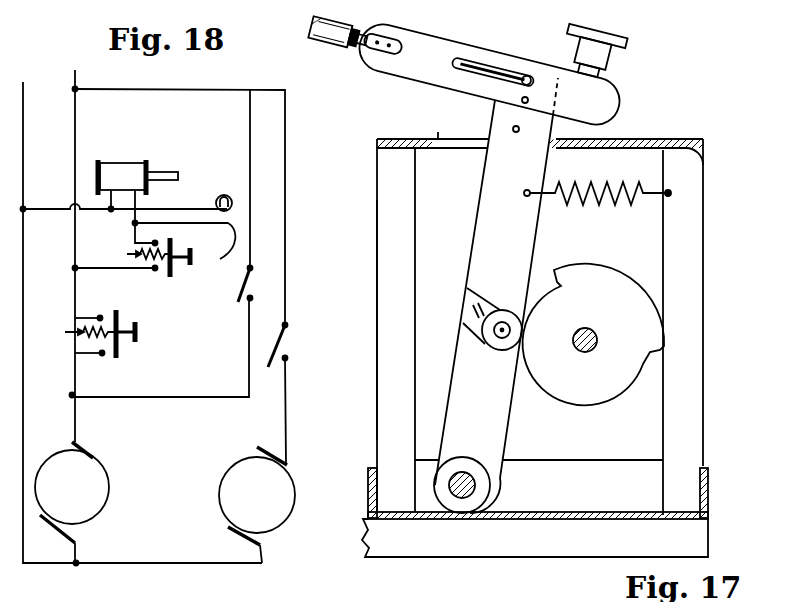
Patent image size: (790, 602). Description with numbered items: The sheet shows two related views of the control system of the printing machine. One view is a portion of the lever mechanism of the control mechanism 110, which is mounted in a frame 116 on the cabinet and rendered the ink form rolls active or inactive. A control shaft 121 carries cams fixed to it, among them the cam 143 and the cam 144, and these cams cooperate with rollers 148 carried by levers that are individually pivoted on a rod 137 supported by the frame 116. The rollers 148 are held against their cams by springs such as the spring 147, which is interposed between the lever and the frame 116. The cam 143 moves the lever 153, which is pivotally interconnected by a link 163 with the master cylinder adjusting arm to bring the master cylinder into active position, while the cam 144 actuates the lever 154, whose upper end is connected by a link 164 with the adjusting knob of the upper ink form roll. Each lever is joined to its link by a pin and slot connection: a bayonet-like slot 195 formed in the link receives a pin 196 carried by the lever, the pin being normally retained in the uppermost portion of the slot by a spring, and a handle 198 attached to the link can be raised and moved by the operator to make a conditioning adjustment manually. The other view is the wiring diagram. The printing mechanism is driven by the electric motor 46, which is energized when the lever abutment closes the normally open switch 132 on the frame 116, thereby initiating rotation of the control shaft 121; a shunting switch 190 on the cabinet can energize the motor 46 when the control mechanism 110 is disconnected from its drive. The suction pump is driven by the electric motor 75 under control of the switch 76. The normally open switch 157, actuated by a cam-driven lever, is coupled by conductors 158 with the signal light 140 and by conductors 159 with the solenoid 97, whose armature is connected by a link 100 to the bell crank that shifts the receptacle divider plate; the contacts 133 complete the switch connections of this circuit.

In FIG. 18, the solenoid 97 is at (122, 168).
In FIG. 18, the link 100 is at (161, 173).
In FIG. 18, the signal light 140 is at (222, 187).
In FIG. 18, the conductors 158 is at (129, 234).
In FIG. 18, the electric switch 157 is at (177, 243).
In FIG. 18, the conductors 159 is at (188, 253).
In FIG. 18, the shunting switch 190 is at (235, 297).
In FIG. 18, the switch 76 is at (282, 340).
In FIG. 18, the contacts 133 is at (74, 316).
In FIG. 18, the electric switch 132 is at (122, 317).
In FIG. 18, the electric motor 46 is at (100, 490).
In FIG. 18, the electric motor 75 is at (228, 474).
In FIG. 17, the bayonet-like slot 195 is at (481, 63).
In FIG. 17, the pin 196 is at (505, 63).
In FIG. 17, the handle 198 is at (602, 59).
In FIG. 17, the link 163 is at (465, 68).
In FIG. 17, the link 164 is at (413, 67).
In FIG. 17, the lever 153 is at (494, 295).
In FIG. 17, the lever 154 is at (488, 207).
In FIG. 17, the spring 147 is at (597, 181).
In FIG. 17, the frame 116 is at (712, 167).
In FIG. 17, the control mechanism 110 is at (705, 252).
In FIG. 17, the rollers 148 is at (508, 306).
In FIG. 17, the cam 143 is at (594, 319).
In FIG. 17, the cam 144 is at (652, 265).
In FIG. 17, the control shaft 121 is at (593, 325).
In FIG. 17, the rod 137 is at (477, 482).